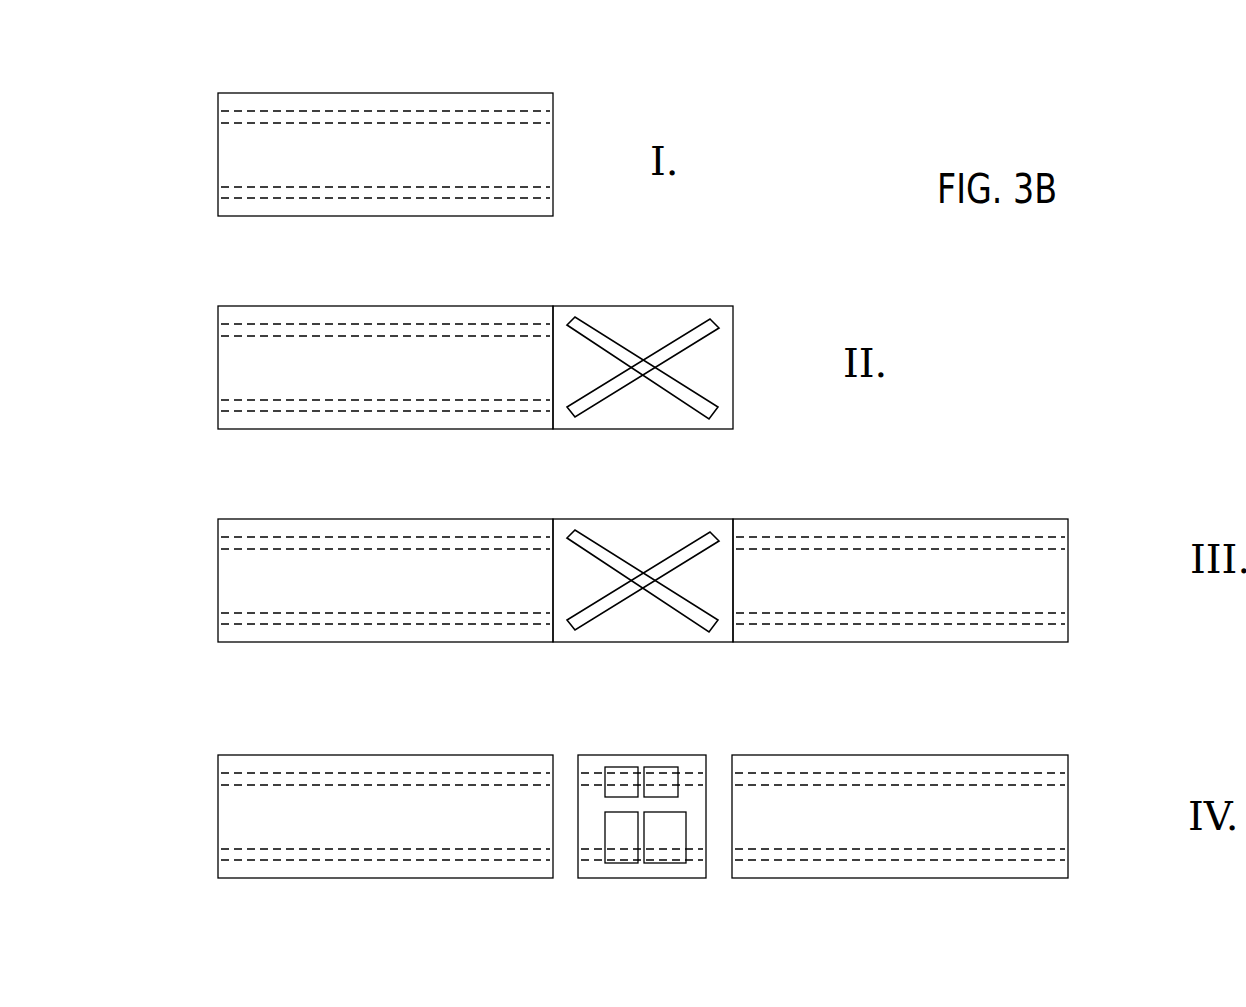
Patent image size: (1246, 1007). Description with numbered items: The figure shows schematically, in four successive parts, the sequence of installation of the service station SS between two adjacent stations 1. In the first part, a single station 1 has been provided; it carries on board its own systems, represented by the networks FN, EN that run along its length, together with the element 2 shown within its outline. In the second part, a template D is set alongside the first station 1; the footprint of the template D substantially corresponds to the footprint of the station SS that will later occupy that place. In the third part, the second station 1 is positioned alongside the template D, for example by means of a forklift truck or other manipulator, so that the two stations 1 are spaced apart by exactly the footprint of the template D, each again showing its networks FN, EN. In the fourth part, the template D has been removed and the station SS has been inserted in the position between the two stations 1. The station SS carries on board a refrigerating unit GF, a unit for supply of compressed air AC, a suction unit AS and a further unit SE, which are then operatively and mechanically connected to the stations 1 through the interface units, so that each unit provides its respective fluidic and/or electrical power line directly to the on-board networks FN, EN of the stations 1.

The station 1 is at (642, 485).
The substrate 2 is at (398, 173).
The network EN is at (432, 109).
The network FN is at (333, 199).
The template D is at (640, 308).
The refrigerating unit GF is at (620, 766).
The unit for supply of compressed air AC is at (663, 766).
The suction unit AS is at (620, 864).
The sensor element SE is at (665, 864).